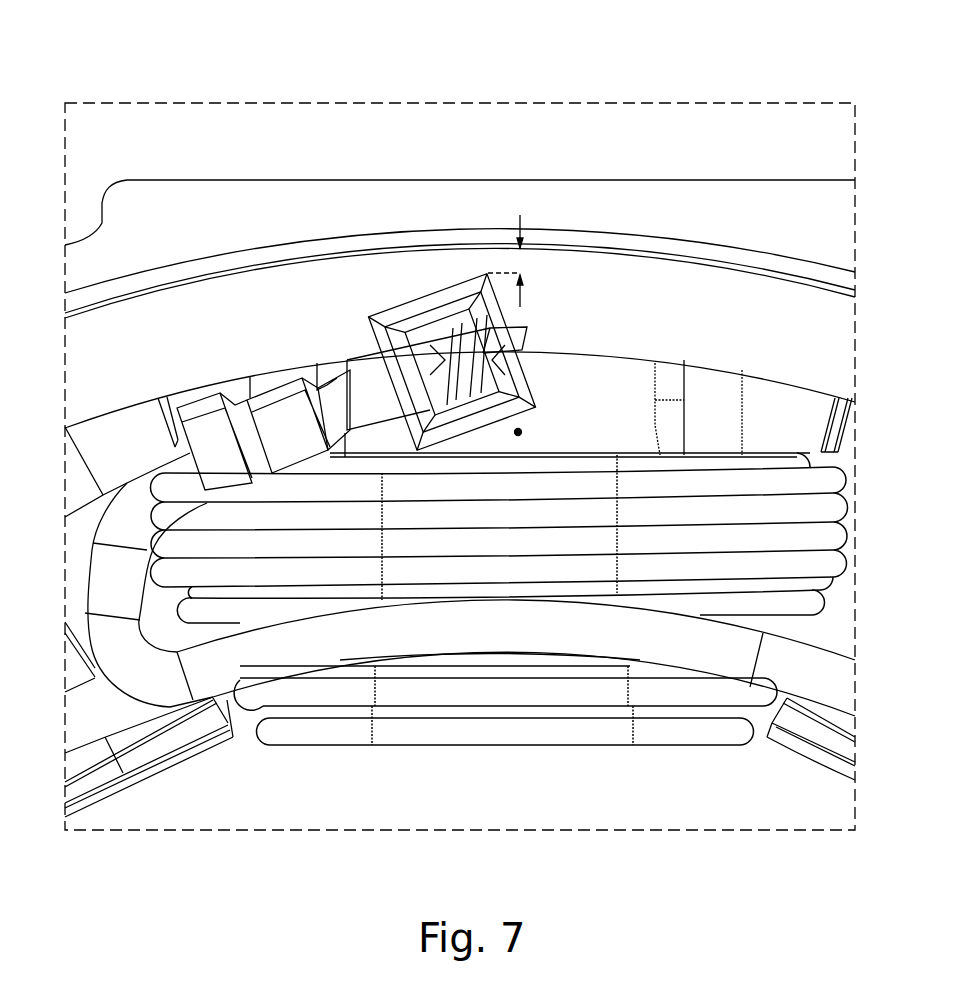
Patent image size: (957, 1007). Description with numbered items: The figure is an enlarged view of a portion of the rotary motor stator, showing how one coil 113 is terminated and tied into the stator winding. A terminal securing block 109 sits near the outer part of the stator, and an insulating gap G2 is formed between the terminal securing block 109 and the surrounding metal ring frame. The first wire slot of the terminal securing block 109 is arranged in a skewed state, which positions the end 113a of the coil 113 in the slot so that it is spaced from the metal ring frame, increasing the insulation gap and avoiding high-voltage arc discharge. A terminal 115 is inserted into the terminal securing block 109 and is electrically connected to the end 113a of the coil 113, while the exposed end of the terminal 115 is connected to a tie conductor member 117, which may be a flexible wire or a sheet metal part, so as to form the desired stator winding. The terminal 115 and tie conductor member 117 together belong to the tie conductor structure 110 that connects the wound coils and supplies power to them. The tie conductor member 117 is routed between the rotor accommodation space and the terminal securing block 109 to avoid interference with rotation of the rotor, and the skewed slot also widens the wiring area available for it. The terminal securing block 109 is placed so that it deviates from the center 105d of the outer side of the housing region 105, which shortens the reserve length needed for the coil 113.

The housing 105 is at (695, 195).
The center of the outer side 105d is at (518, 432).
The terminal securing block 109 is at (418, 303).
The insulating gap G2 is at (520, 215).
The end of the coil 113a is at (522, 342).
The coil 113 is at (510, 732).
The terminal 115 is at (448, 382).
The tie conductor member 117 is at (260, 668).
The tie conductor structure 110 is at (367, 872).